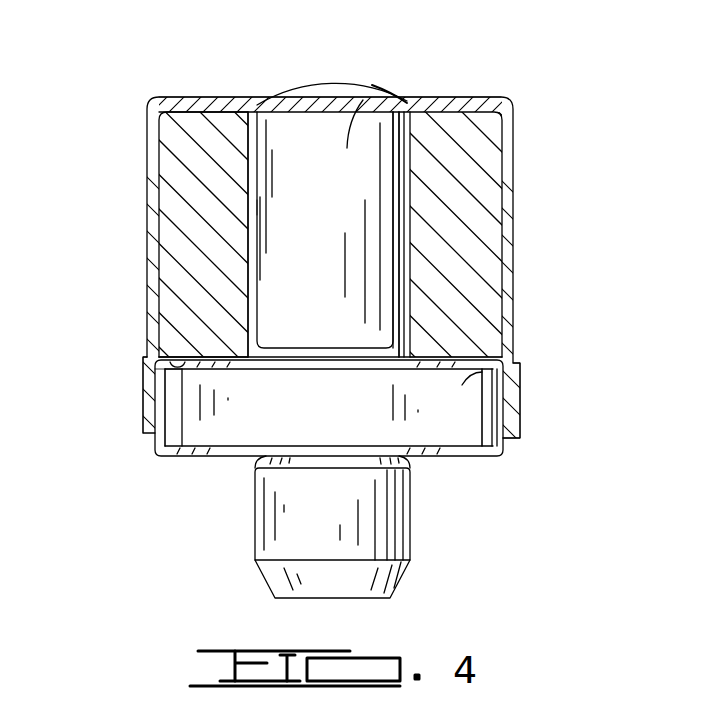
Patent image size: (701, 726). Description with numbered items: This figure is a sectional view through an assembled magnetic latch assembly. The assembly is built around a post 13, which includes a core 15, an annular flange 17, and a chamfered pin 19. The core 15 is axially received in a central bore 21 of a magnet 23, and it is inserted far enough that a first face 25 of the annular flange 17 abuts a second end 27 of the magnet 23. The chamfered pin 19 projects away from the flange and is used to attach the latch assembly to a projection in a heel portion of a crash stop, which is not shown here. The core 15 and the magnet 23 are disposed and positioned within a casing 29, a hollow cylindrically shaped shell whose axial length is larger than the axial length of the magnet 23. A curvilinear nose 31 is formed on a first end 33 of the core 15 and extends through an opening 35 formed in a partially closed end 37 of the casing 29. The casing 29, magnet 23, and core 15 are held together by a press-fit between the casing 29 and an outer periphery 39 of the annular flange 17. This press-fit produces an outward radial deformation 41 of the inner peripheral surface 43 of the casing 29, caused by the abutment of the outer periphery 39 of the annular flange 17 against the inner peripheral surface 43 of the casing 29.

The post 13 is at (250, 205).
The core 15 is at (383, 88).
The annular flange 17 is at (232, 422).
The chamfered pin 19 is at (273, 528).
The central bore 21 is at (408, 168).
The magnet 23 is at (475, 190).
The first face 25 is at (440, 352).
The second end 27 is at (522, 384).
The casing 29 is at (152, 165).
The nose 31 is at (294, 87).
The first end 33 is at (336, 87).
The opening 35 is at (405, 103).
The partially closed end 37 is at (186, 103).
The outer periphery 39 is at (418, 420).
The outward radial deformation 41 is at (150, 358).
The inner peripheral surface 43 is at (185, 368).